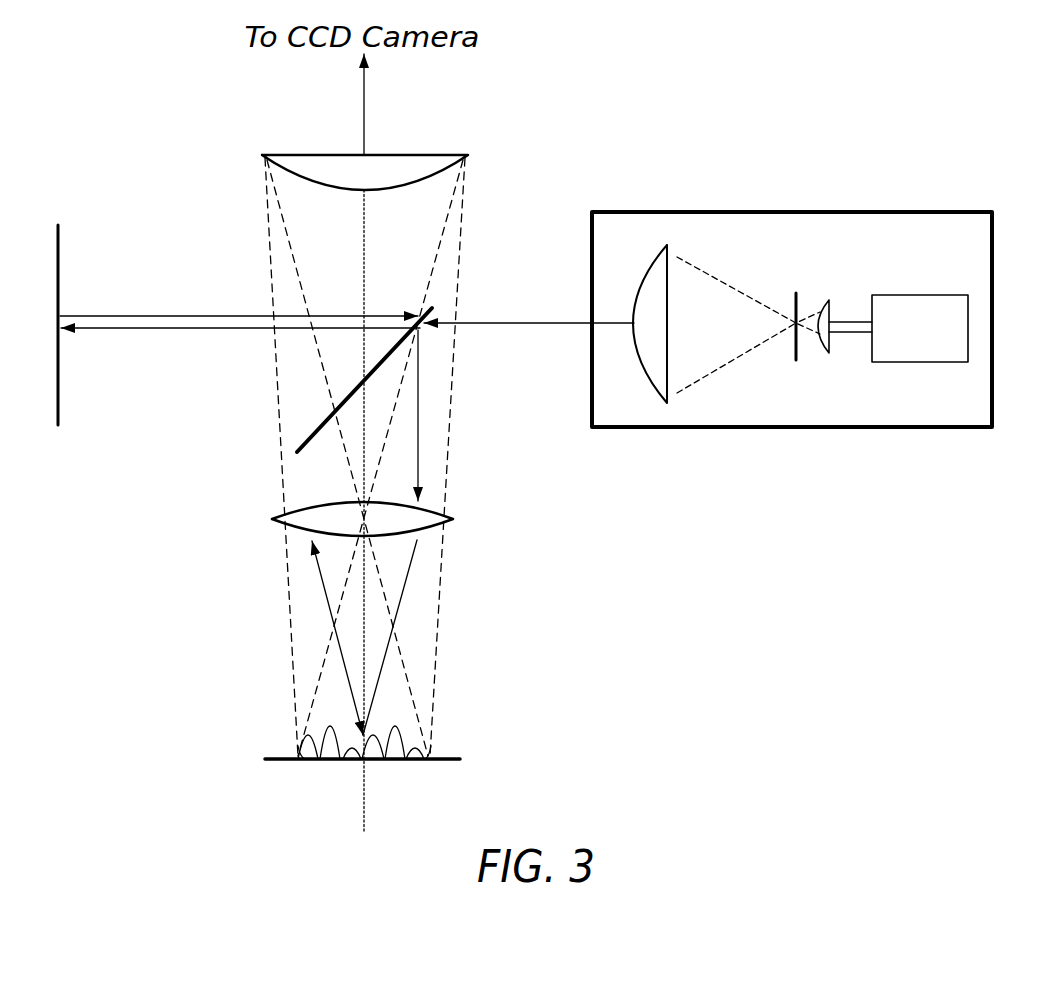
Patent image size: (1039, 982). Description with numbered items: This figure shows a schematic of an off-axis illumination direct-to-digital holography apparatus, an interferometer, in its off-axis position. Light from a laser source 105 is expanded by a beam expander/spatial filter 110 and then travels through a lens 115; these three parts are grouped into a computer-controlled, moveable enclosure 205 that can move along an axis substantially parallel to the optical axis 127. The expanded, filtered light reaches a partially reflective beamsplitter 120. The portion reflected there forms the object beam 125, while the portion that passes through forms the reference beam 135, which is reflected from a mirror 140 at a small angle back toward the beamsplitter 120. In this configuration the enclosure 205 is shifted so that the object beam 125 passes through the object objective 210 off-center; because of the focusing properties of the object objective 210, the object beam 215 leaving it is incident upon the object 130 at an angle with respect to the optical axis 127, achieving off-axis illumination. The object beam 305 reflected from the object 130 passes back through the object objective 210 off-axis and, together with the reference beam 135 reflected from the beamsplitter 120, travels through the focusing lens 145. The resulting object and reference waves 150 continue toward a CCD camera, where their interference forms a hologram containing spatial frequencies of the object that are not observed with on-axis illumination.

The laser source 105 is at (907, 373).
The beam expander/spatial filter 110 is at (731, 371).
The lens 115 is at (650, 390).
The beamsplitter 120 is at (380, 378).
The object beam 125 is at (422, 462).
The optical axis 127 is at (368, 224).
The object 130 is at (338, 763).
The reference beam 135 is at (200, 310).
The mirror 140 is at (61, 388).
The focusing lens 145 is at (310, 184).
The object and reference waves 150 is at (368, 114).
The enclosure 205 is at (833, 208).
The object objective 210 is at (437, 537).
The object beam 215 is at (388, 656).
The reflected object beam 305 is at (321, 598).